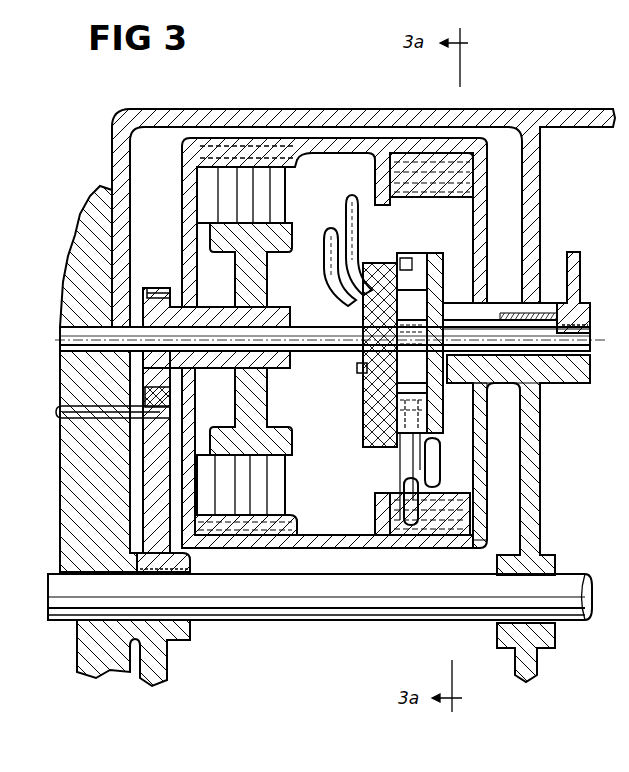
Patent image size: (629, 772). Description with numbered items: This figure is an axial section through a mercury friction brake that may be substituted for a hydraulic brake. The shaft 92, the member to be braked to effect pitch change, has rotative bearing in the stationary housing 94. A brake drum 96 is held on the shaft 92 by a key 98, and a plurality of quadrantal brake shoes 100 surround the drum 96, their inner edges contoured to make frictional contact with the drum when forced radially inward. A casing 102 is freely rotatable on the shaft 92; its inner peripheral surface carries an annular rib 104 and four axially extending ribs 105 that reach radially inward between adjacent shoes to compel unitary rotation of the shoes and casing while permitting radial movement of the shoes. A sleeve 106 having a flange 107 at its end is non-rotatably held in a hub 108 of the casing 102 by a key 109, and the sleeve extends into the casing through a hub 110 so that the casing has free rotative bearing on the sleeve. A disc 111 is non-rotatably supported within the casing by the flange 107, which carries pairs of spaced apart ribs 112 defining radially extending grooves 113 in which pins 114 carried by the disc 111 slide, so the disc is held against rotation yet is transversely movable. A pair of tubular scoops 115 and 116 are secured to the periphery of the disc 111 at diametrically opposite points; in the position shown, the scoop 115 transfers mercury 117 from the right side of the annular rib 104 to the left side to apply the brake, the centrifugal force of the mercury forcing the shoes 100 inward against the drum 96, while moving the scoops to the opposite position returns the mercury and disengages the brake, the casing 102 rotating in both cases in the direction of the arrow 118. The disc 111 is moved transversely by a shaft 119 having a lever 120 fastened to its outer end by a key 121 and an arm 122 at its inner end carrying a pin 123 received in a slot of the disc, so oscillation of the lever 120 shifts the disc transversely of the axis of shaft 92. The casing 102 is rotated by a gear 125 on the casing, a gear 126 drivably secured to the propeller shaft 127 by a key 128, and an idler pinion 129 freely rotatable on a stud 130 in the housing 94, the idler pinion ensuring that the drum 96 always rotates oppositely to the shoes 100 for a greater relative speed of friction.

The shaft 92 is at (80, 325).
The stationary housing 94 is at (203, 108).
The brake drum 96 is at (243, 307).
The key 98 is at (330, 336).
The brake shoes 100 is at (280, 487).
The casing 102 is at (185, 168).
The annular rib 104 is at (366, 160).
The axially extending ribs 105 is at (307, 150).
The sleeve 106 is at (582, 367).
The flange 107 is at (438, 273).
The hub 108 is at (548, 385).
The key 109 is at (499, 302).
The hub 110 is at (462, 384).
The disc 111 is at (413, 333).
The ribs 112 is at (405, 256).
The grooves 113 is at (380, 355).
The pins 114 is at (395, 420).
The tubular scoop 115 is at (324, 261).
The tubular scoop 116 is at (266, 195).
The mercury 117 is at (445, 530).
The arrow 118 is at (451, 190).
The shaft 119 is at (586, 342).
The lever 120 is at (579, 282).
The key 121 is at (592, 323).
The arm 122 is at (430, 340).
The pin 123 is at (357, 368).
The gear 125 is at (163, 276).
The gear 126 is at (172, 656).
The propeller shaft 127 is at (405, 620).
The key 128 is at (192, 569).
The idler pinion 129 is at (168, 393).
The stud 130 is at (58, 416).